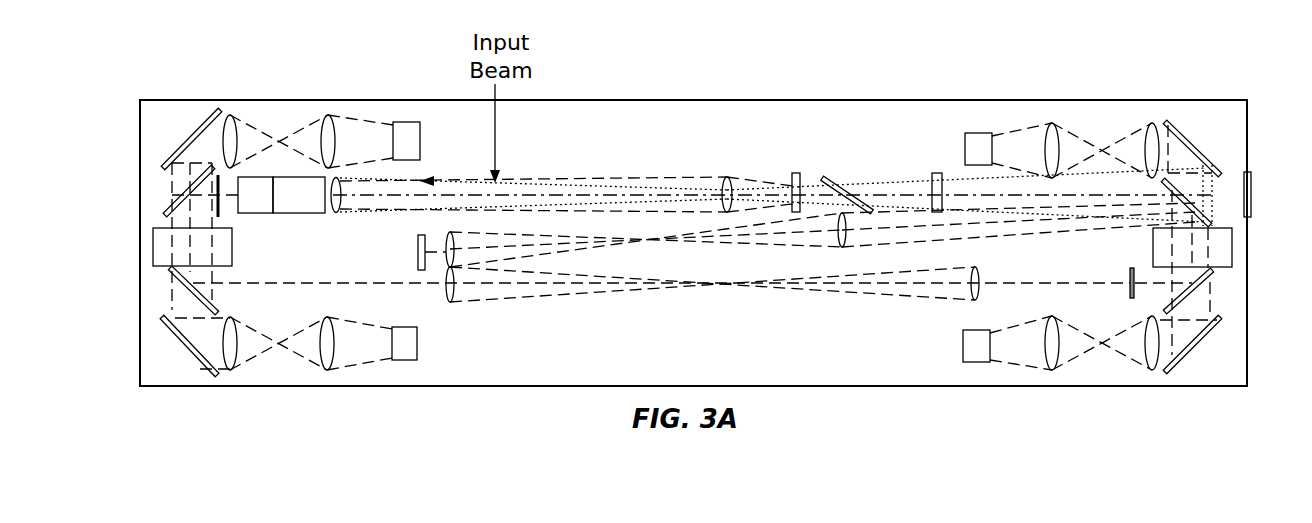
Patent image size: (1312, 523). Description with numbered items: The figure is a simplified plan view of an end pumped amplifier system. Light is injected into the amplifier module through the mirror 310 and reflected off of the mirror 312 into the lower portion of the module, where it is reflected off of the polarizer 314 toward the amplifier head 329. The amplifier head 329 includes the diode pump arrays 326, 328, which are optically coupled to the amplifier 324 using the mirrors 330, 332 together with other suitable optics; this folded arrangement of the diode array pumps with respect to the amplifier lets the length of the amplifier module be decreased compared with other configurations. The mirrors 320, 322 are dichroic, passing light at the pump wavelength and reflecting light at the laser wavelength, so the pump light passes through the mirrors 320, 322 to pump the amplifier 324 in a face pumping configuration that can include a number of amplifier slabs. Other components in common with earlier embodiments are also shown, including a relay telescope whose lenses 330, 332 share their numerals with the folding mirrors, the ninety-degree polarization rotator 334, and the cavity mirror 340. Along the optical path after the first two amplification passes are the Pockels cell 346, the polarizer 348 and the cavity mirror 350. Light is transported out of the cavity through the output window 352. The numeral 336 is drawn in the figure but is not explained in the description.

The mirror 310 is at (497, 183).
The mirror 312 is at (303, 213).
The polarizer 314 is at (253, 213).
The mirror 320 is at (170, 203).
The mirror 322 is at (172, 287).
The amplifier 324 is at (153, 248).
The diode pump array 326 is at (405, 122).
The diode pump array 328 is at (418, 344).
The amplifier head 329 is at (123, 322).
The mirror / lens 330 is at (189, 137).
The mirror / lens 332 is at (187, 352).
The 90° polarization rotator 334 is at (1132, 268).
The detection module 336 is at (1107, 372).
The cavity mirror 340 is at (418, 242).
The Pockels cell 346 is at (797, 172).
The polarizer 348 is at (838, 178).
The cavity mirror 350 is at (937, 172).
The output window 352 is at (1252, 190).